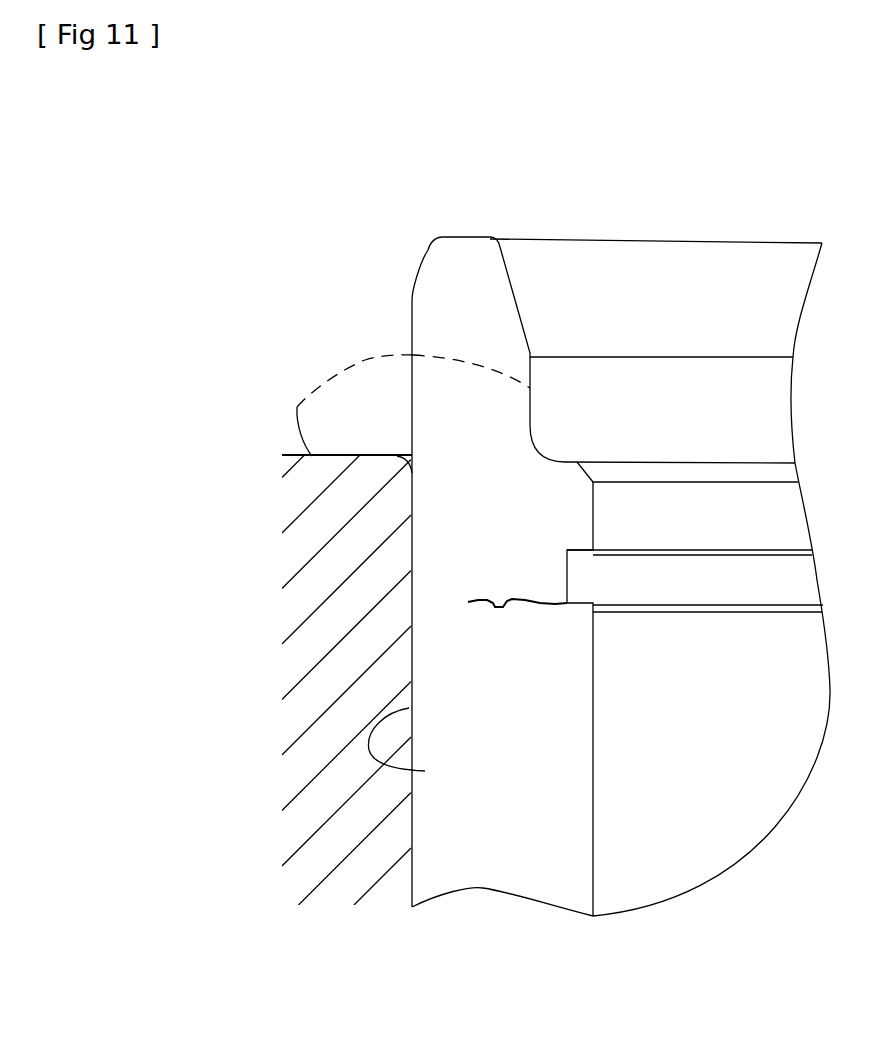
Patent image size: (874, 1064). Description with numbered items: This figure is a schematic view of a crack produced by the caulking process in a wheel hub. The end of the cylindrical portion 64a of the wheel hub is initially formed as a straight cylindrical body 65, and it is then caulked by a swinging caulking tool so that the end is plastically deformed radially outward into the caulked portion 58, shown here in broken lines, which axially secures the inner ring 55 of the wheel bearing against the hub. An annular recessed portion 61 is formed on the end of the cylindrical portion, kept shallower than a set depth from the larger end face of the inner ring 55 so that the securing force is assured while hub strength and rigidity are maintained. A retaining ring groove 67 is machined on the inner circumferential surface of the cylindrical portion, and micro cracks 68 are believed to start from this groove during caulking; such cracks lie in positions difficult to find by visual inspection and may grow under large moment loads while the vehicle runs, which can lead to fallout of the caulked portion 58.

The inner ring 55 is at (347, 590).
The caulked portion 58 is at (358, 403).
The annular recessed portion 61 is at (547, 442).
The cylindrical portion 64a is at (425, 771).
The straight cylindrical body 65 is at (453, 280).
The retaining ring groove 67 is at (568, 575).
The micro cracks 68 is at (507, 607).